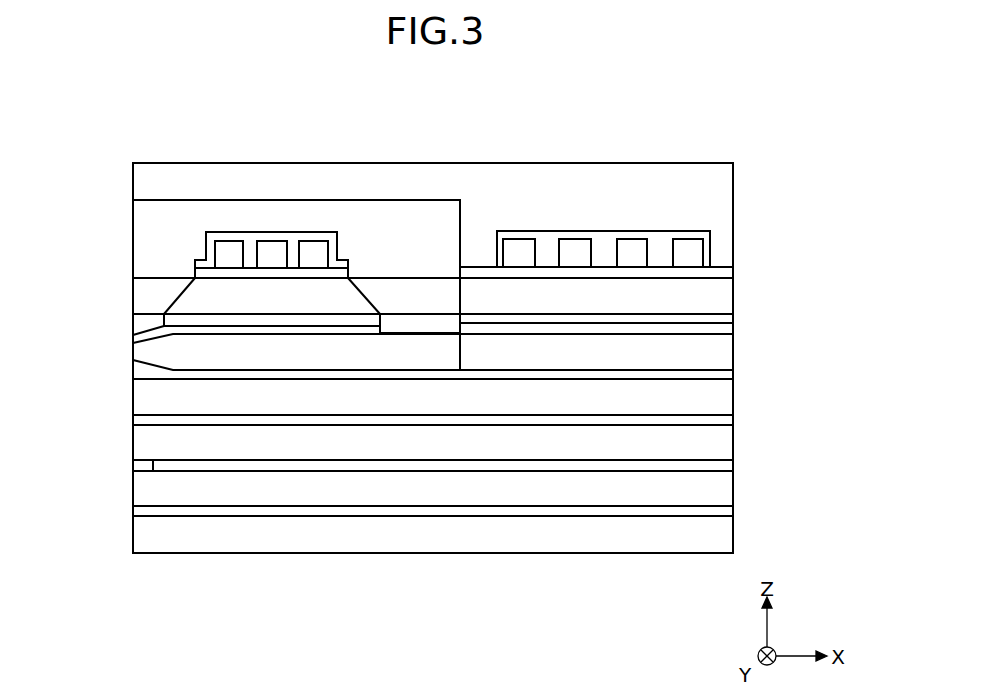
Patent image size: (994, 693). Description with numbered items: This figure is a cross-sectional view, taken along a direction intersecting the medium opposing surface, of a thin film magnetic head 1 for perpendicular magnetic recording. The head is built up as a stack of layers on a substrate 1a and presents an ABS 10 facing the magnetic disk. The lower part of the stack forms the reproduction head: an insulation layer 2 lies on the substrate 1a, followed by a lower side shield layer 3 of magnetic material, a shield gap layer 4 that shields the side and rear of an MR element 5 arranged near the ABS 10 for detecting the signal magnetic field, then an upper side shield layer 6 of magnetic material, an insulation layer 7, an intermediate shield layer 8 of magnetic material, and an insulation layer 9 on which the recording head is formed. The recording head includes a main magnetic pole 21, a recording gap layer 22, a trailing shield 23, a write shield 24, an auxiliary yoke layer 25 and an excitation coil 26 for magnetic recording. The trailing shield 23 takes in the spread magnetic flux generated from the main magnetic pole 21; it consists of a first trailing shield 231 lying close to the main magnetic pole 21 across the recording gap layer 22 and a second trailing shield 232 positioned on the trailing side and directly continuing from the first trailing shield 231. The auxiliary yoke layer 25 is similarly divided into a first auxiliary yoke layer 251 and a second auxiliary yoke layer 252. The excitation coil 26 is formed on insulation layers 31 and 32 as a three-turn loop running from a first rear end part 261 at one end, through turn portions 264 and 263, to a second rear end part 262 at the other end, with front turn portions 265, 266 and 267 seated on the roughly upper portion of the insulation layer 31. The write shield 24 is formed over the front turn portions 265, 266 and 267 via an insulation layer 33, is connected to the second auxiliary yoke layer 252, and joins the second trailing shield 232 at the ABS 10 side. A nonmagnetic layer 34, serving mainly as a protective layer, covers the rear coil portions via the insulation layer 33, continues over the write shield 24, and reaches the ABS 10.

The thin film magnetic head 1 is at (793, 146).
The substrate 1a is at (713, 533).
The insulation layer 2 is at (677, 510).
The lower side shield layer 3 is at (628, 487).
The shield gap layer 4 is at (589, 465).
The MR element 5 is at (147, 467).
The upper side shield layer 6 is at (553, 447).
The insulation layer 7 is at (518, 418).
The intermediate shield layer 8 is at (483, 400).
The insulation layer 9 is at (455, 375).
The ABS 10 is at (131, 196).
The main magnetic pole 21 is at (132, 357).
The recording gap layer 22 is at (155, 352).
The trailing shield 23 is at (73, 277).
The first trailing shield 231 is at (145, 318).
The second trailing shield 232 is at (150, 303).
The write shield 24 is at (157, 233).
The auxiliary yoke layer 25 is at (378, 127).
The first auxiliary yoke layer 251 is at (422, 325).
The second auxiliary yoke layer 252 is at (383, 295).
The excitation coil for magnetic recording 26 is at (203, 127).
The first rear end part 261 is at (520, 250).
The second rear end part 262 is at (682, 250).
The turn portion of excitation coil 263 is at (632, 250).
The turn portion of excitation coil 264 is at (572, 250).
The front turn portion 265 is at (228, 256).
The front turn portion 266 is at (273, 256).
The front turn portion 267 is at (315, 256).
The insulation layer 31 is at (187, 305).
The insulation layer 32 is at (710, 295).
The insulation layer 33 is at (210, 238).
The nonmagnetic layer 34 is at (147, 178).